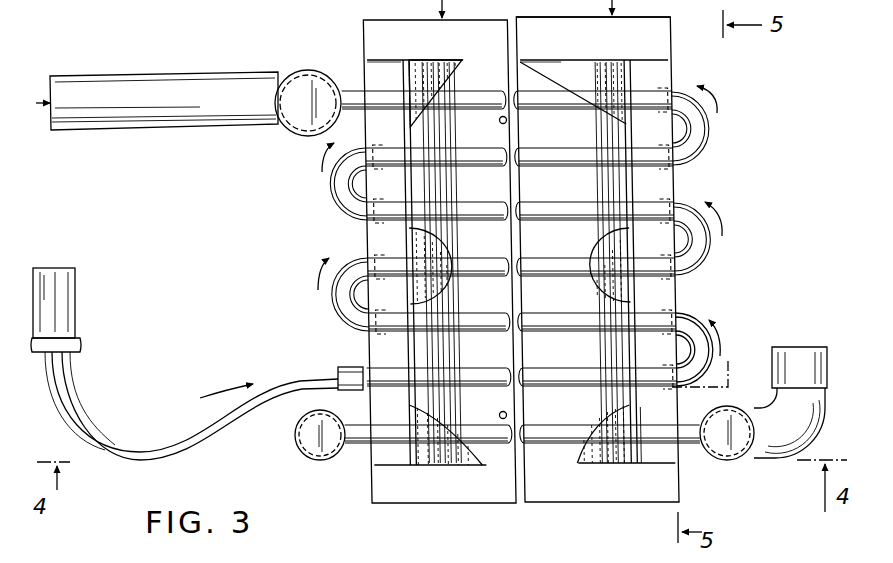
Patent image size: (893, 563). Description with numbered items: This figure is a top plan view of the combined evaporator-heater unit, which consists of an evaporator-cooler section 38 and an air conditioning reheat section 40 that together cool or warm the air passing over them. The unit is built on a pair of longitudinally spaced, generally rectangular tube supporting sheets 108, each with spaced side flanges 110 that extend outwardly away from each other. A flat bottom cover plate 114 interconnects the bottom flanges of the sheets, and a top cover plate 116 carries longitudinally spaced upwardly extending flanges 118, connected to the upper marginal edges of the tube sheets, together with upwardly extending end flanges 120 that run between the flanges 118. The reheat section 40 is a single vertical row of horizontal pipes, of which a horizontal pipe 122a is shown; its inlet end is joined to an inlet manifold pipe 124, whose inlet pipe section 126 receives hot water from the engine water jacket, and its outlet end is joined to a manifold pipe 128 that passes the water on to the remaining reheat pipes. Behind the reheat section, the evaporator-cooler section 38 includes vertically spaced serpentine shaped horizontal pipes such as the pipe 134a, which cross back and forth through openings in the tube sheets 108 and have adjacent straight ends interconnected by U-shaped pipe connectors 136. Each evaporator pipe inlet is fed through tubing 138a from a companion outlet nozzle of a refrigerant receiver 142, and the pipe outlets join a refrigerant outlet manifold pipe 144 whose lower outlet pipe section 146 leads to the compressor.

The evaporator-cooler section 38 is at (541, 362).
The air conditioning reheat section 40 is at (702, 407).
The tube supporting sheet 108 is at (645, 186).
The side flange 110 is at (668, 60).
The bottom cover plate 114 is at (668, 28).
The top cover plate 116 is at (580, 465).
The upwardly extending flange 118 is at (407, 73).
The end flange 120 is at (522, 65).
The horizontal pipe 122a is at (540, 424).
The inlet manifold pipe 124 is at (727, 461).
The inlet pipe section 126 is at (815, 436).
The manifold pipe 128 is at (312, 461).
The serpentine shaped horizontal pipe 134a is at (346, 366).
The U-shaped pipe connector 136 is at (690, 308).
The tubing 138a is at (165, 446).
The refrigerant receiver 142 is at (80, 313).
The refrigerant outlet manifold pipe 144 is at (300, 137).
The lower outlet pipe section 146 is at (143, 131).